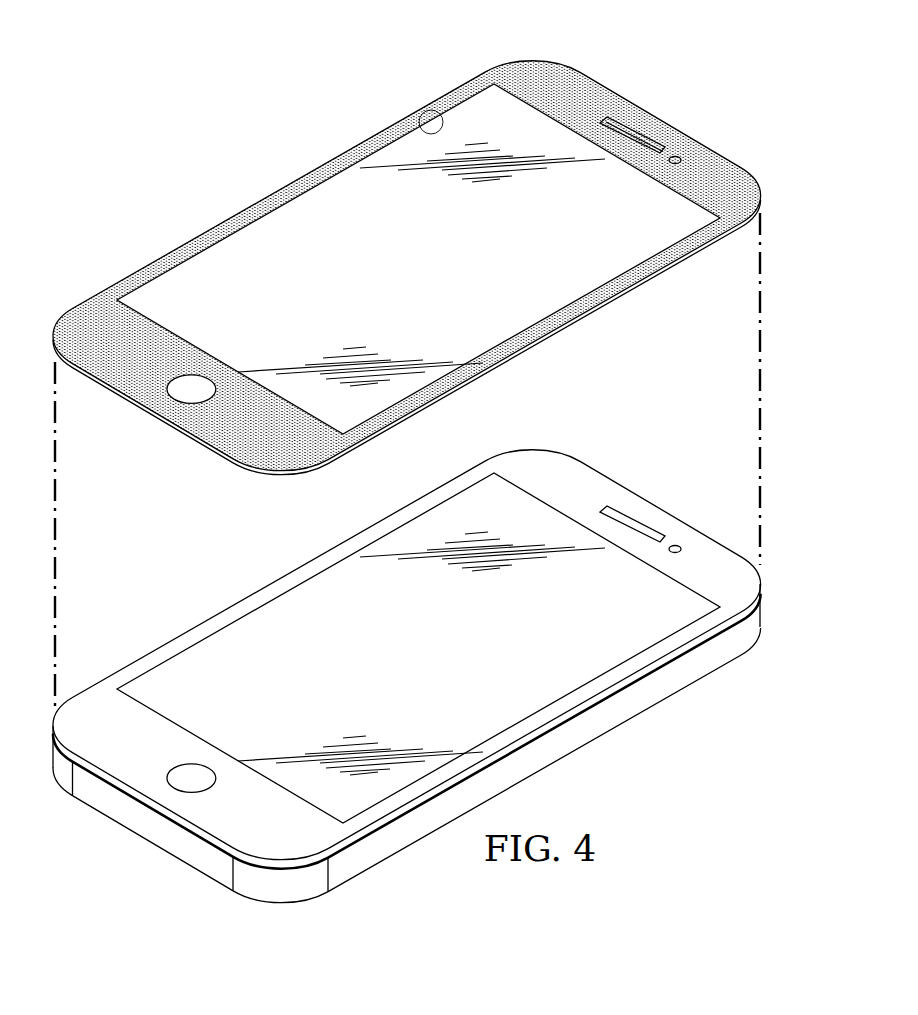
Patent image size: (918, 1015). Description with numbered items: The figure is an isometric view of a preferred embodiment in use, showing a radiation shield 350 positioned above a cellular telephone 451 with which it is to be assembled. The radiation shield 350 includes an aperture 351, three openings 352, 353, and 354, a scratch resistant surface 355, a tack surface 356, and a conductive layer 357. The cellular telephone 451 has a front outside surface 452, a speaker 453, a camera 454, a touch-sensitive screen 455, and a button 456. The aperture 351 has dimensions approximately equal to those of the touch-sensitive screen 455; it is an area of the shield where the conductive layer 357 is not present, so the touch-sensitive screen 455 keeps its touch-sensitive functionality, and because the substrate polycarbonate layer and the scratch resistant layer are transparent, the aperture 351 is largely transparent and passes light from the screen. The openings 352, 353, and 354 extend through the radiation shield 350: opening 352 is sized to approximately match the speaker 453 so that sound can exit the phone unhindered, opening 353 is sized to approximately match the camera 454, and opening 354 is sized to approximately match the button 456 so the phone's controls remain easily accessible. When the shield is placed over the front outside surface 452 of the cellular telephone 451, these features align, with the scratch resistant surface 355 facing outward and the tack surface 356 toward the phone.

The radiation shield 350 is at (738, 157).
The aperture 351 is at (438, 111).
The opening 352 is at (617, 128).
The opening 353 is at (677, 156).
The opening 354 is at (197, 380).
The scratch resistant surface 355 is at (93, 310).
The tack surface 356 is at (178, 430).
The conductive layer 357 is at (560, 76).
The cellular telephone 451 is at (702, 683).
The front outside surface 452 is at (560, 466).
The speaker 453 is at (617, 518).
The camera 454 is at (677, 545).
The touch-sensitive screen 455 is at (415, 533).
The button 456 is at (197, 770).